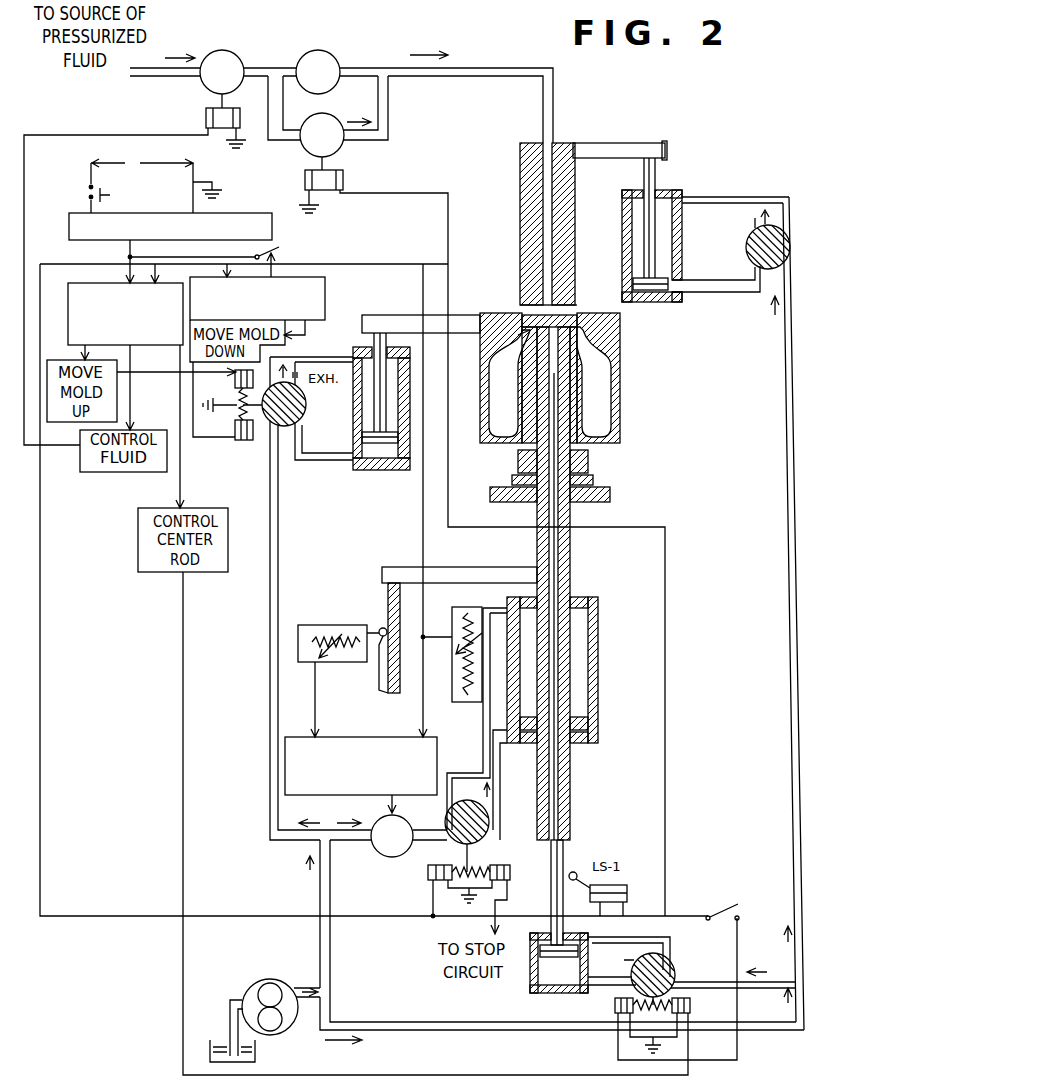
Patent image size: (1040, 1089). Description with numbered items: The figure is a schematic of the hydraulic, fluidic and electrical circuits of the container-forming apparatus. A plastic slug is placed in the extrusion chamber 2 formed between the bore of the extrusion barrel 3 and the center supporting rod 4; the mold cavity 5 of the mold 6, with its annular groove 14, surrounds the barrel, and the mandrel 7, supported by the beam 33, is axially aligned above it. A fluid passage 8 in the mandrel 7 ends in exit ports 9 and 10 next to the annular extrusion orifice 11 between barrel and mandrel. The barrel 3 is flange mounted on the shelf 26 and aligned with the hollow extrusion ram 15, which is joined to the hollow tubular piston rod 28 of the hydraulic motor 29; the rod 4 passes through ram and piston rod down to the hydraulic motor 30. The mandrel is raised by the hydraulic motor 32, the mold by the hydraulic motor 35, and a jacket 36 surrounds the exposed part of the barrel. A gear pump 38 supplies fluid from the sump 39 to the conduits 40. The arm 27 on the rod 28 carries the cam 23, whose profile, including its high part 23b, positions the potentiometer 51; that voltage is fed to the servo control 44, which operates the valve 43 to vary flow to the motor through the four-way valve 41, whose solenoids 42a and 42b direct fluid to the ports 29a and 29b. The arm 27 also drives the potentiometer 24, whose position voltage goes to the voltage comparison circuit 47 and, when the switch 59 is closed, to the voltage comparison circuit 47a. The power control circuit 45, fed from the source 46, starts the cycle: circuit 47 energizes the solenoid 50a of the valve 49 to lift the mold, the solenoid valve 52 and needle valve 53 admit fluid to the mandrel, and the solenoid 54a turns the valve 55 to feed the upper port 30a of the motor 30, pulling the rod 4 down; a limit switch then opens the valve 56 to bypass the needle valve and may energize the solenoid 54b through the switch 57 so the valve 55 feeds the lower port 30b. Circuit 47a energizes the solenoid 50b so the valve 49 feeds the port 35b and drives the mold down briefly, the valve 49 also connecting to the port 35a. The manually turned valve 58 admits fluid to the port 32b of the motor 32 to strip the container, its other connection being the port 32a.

The extrusion chamber 2 is at (492, 356).
The extrusion barrel 3 is at (578, 396).
The center supporting rod 4 is at (564, 846).
The mold cavity 5 is at (508, 410).
The mold 6 is at (620, 364).
The mandrel 7 is at (521, 173).
The fluid passage 8 is at (543, 211).
The fluid exit port 9 is at (521, 312).
The fluid exit port 10 is at (571, 312).
The annular extrusion orifice 11 is at (495, 347).
The annular groove 14 is at (578, 331).
The hollow extrusion ram 15 is at (567, 416).
The cam 23 is at (388, 606).
The high part of cam 23b is at (379, 670).
The potentiometer 24 is at (455, 703).
The shelf 26 is at (610, 492).
The arm 27 is at (436, 567).
The hollow tubular piston rod 28 is at (571, 562).
The hydraulic motor 29 is at (598, 648).
The port 29a is at (506, 752).
The port 29b is at (498, 614).
The hydraulic motor 30 is at (530, 968).
The upper port 30a is at (589, 943).
The lower port 30b is at (588, 997).
The hydraulic motor 32 is at (622, 226).
The conduit 32a is at (684, 196).
The port 32b is at (684, 303).
The beam 33 is at (620, 143).
The hydraulic motor 35 is at (353, 425).
The conduit 35a is at (354, 468).
The port 35b is at (354, 357).
The jacket 36 is at (588, 466).
The gear pump 38 is at (260, 982).
The sump 39 is at (257, 1053).
The conduits 40 is at (271, 780).
The valve 41 is at (481, 842).
The solenoid 42a is at (428, 873).
The solenoid 42b is at (510, 873).
The valve 43 is at (379, 816).
The servo control 44 is at (383, 736).
The power control circuit 45 is at (71, 213).
The source 46 is at (155, 184).
The voltage comparison circuit 47 is at (78, 284).
The voltage comparison circuit 47a is at (327, 302).
The valve 49 is at (305, 410).
The solenoid 50a is at (235, 375).
The solenoid 50b is at (244, 441).
The potentiometer 51 is at (323, 626).
The solenoid valve 52 is at (234, 58).
The needle valve 53 is at (330, 58).
The solenoid 54a is at (691, 1006).
The solenoid 54b is at (616, 1014).
The valve 55 is at (673, 966).
The valve 56 is at (340, 150).
The switch 57 is at (722, 905).
The valve 58 is at (746, 247).
The switch 59 is at (282, 248).